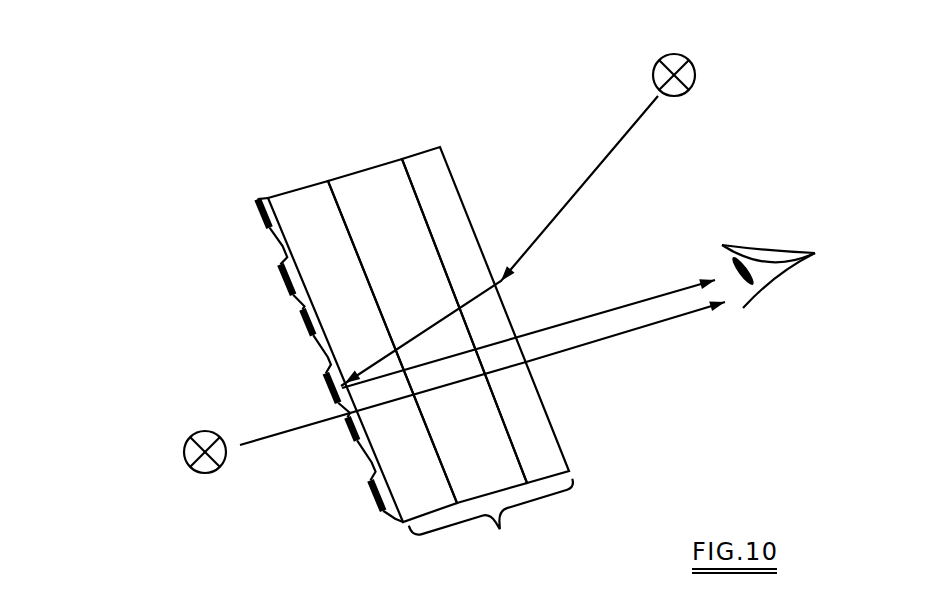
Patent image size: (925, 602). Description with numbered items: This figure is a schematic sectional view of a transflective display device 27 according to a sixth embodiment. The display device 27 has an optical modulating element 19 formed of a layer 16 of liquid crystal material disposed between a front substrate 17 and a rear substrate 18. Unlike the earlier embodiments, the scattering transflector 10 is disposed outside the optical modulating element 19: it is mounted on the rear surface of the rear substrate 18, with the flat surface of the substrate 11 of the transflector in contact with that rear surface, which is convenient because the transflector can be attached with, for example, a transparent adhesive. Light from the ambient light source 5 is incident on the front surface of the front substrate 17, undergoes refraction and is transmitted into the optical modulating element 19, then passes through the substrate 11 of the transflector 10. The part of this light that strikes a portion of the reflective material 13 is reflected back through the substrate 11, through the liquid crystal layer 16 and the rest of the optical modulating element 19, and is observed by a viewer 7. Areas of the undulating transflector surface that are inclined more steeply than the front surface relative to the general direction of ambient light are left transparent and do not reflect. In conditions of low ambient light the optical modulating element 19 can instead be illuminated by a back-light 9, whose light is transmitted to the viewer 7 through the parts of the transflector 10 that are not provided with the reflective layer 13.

The ambient light source 5 is at (770, 94).
The viewer 7 is at (790, 294).
The back-light 9 is at (435, 385).
The scattering transflector 10 is at (268, 198).
The substrate of the transflector 11 is at (335, 360).
The reflective material 13 is at (285, 275).
The liquid crystal layer 16 is at (383, 193).
The front substrate 17 is at (528, 407).
The rear substrate 18 is at (297, 198).
The optical modulating element 19 is at (494, 525).
The display device 27 is at (438, 276).